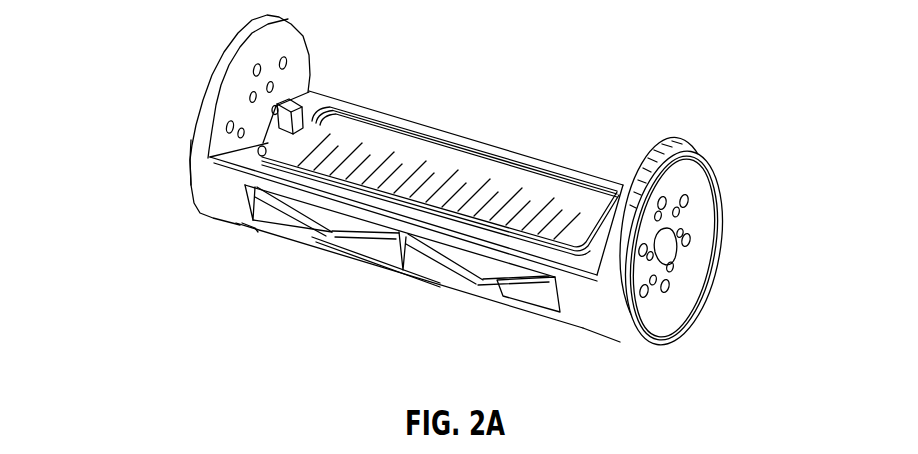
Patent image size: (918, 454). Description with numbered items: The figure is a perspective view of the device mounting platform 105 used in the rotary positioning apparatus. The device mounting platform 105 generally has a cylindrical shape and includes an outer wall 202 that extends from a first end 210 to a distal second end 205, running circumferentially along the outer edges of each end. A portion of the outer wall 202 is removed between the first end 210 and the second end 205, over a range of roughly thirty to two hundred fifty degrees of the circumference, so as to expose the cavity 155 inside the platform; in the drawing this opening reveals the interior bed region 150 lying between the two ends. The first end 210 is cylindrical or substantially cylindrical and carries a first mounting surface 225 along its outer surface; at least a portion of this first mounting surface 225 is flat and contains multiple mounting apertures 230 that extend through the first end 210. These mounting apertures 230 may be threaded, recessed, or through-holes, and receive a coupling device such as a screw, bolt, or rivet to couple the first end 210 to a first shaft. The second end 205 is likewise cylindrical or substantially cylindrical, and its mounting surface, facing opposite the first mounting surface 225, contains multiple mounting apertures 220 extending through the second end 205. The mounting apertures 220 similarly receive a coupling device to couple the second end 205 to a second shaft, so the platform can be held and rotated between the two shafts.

The device mounting platform 105 is at (286, 233).
The platform bed 150 is at (452, 163).
The cavity 155 is at (253, 145).
The outer wall 202 is at (610, 315).
The second end 205 is at (725, 193).
The first end 210 is at (228, 43).
The mounting apertures 220 is at (690, 241).
The first mounting surface 225 is at (193, 148).
The mounting apertures 230 is at (260, 68).